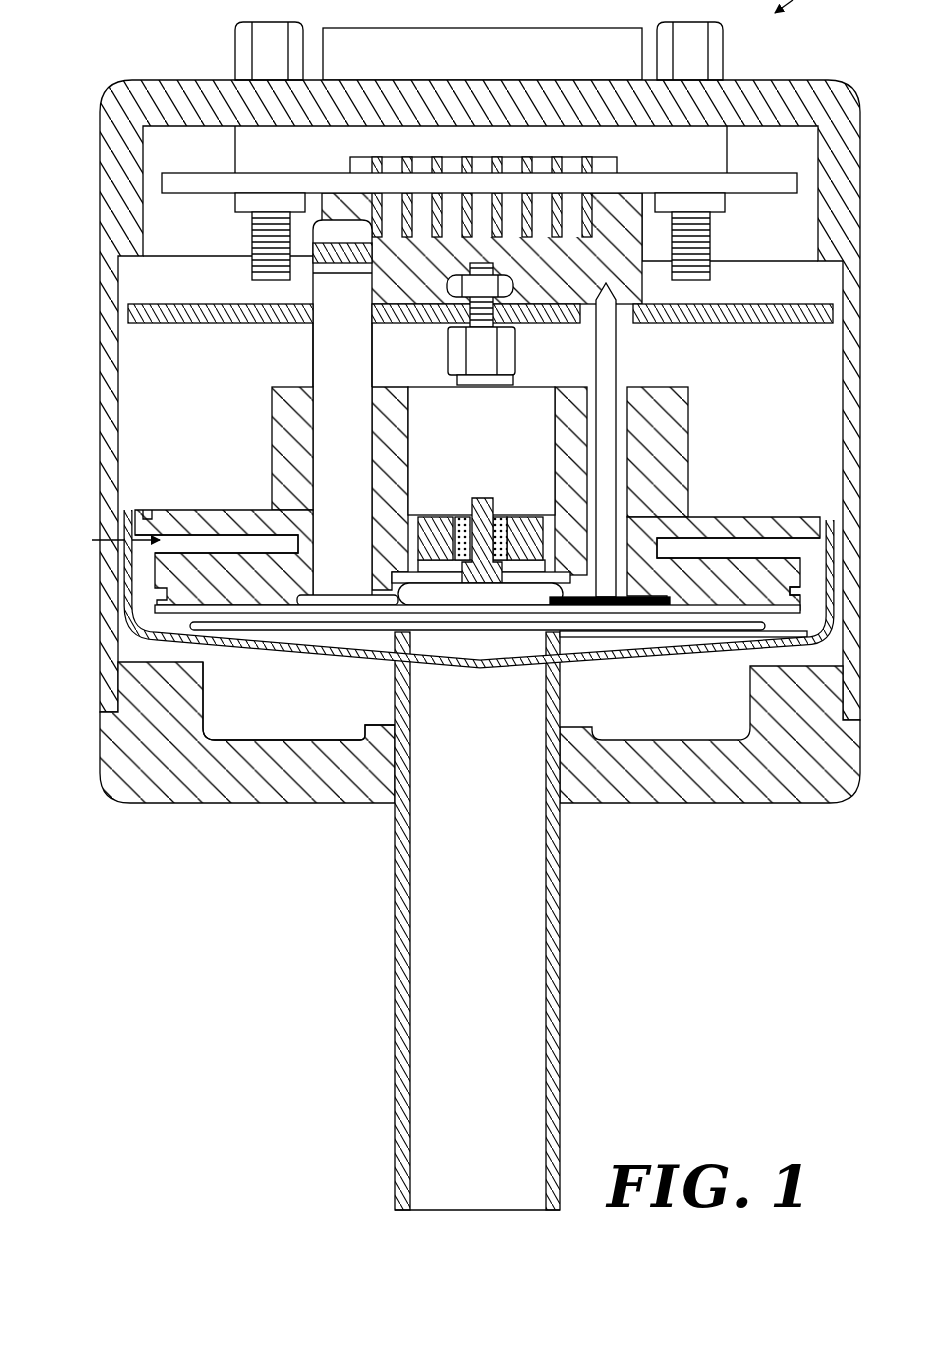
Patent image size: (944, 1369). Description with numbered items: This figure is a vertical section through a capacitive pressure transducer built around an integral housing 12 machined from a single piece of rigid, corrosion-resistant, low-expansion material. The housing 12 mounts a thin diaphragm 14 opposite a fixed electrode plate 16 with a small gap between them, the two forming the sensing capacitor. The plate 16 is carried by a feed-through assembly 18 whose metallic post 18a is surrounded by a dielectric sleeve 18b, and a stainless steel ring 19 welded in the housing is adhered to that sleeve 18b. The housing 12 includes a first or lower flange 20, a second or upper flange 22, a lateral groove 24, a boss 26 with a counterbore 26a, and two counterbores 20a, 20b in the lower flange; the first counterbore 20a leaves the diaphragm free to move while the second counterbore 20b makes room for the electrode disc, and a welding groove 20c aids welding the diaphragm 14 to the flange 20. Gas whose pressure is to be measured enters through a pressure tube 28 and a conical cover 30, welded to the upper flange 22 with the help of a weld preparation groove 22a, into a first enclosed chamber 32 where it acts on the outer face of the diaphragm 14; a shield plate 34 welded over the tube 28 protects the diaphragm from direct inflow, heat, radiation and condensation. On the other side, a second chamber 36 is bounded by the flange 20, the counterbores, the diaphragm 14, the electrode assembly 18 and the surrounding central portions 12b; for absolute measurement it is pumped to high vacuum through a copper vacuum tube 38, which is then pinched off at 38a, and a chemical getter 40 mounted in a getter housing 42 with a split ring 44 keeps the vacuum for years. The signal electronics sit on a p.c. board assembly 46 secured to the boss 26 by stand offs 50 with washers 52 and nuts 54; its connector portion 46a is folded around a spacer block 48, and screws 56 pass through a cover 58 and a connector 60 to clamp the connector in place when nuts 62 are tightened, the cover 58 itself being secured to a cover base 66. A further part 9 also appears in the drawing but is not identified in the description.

The diaphragm plate 9 is at (380, 614).
The housing 12 is at (250, 485).
The surrounding central portions 12b is at (398, 495).
The diaphragm 14 is at (348, 600).
The fixed electrode plate 16 is at (536, 600).
The feed-through assembly 18 is at (474, 497).
The metallic post 18a is at (482, 498).
The dielectric/insulating sleeve 18b is at (503, 515).
The stainless steel ring 19 is at (520, 518).
The first or lower flange 20 is at (258, 595).
The first counterbore 20a is at (645, 606).
The second counterbore 20b is at (578, 600).
The welding groove 20c is at (800, 590).
The second or upper flange 22 is at (202, 520).
The weld preparation groove 22a is at (803, 517).
The lateral groove 24 is at (106, 540).
The boss 26 is at (286, 408).
The counterbore in the boss 26a is at (530, 397).
The pressure tube 28 is at (395, 925).
The cover (tube flange) 30 is at (122, 627).
The first enclosed chamber 32 is at (476, 618).
The shield plate 34 is at (358, 622).
The second chamber 36 is at (450, 582).
The vacuum tube 38 is at (627, 358).
The pinch-off 38a is at (614, 302).
The chemical getter 40 is at (330, 250).
The getter housing 42 is at (313, 352).
The split ring 44 is at (340, 272).
The p.c. board assembly 46 is at (756, 326).
The connector portion 46a is at (760, 176).
The spacer block 48 is at (650, 238).
The stand offs 50 is at (456, 350).
The washers 52 is at (517, 312).
The nuts 54 is at (450, 318).
The screws 56 is at (235, 40).
The cover 58 is at (100, 238).
The connector 60 is at (235, 146).
The nuts 62 is at (250, 203).
The cover base 66 is at (100, 748).